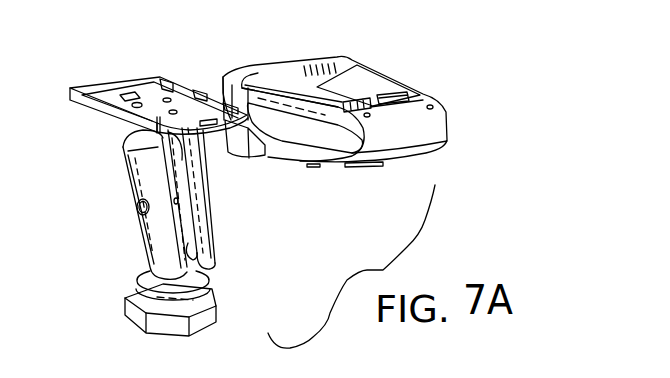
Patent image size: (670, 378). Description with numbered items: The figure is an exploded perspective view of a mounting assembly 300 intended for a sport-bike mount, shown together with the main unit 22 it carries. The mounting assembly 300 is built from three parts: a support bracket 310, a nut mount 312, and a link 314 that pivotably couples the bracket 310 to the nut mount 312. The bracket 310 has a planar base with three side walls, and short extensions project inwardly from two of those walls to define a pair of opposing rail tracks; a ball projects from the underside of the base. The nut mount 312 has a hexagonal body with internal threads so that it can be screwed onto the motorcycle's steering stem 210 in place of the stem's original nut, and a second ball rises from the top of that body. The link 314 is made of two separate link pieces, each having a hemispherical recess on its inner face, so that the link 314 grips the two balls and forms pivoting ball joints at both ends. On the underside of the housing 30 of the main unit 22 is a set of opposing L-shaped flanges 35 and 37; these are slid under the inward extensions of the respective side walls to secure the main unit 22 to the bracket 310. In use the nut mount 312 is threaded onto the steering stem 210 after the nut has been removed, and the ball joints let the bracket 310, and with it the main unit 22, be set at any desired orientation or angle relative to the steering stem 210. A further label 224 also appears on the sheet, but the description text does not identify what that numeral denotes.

The main unit 22 is at (459, 143).
The housing 30 is at (447, 118).
The L-shaped flange 35 is at (277, 80).
The L-shaped flange 37 is at (390, 73).
The mounting assembly 300 is at (115, 177).
The support bracket 310 is at (105, 78).
The nut mount 312 is at (138, 317).
The link 314 is at (208, 219).
The battery pack 224 is at (473, 371).
The steering stem 210 is at (589, 370).